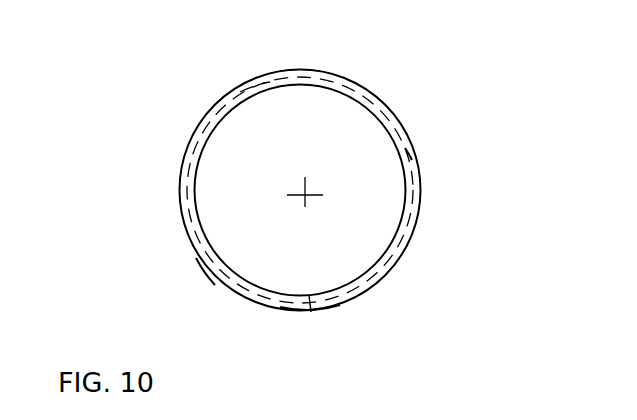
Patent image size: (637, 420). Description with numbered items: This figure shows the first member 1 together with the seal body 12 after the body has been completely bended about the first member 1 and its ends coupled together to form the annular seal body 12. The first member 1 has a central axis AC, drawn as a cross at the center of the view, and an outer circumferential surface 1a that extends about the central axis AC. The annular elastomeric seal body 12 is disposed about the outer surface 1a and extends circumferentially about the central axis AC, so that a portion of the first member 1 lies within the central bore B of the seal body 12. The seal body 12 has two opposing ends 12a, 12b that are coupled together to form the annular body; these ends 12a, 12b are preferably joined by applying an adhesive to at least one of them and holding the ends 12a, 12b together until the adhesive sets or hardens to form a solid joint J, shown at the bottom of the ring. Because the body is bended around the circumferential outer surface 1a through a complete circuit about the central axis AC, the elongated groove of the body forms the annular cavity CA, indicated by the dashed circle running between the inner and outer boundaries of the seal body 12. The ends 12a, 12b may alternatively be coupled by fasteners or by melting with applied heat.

The first member 1 is at (353, 134).
The outer circumferential surface 1a is at (393, 152).
The annular elastomeric seal body 12 is at (415, 193).
The first end of the seal body 12a is at (300, 309).
The second end of the seal body 12b is at (327, 307).
The joint J is at (311, 299).
The central bore B is at (230, 274).
The annular cavity CA is at (255, 82).
The central axis AC is at (308, 193).